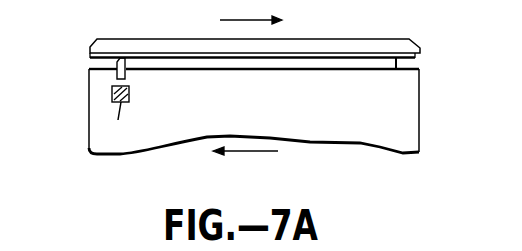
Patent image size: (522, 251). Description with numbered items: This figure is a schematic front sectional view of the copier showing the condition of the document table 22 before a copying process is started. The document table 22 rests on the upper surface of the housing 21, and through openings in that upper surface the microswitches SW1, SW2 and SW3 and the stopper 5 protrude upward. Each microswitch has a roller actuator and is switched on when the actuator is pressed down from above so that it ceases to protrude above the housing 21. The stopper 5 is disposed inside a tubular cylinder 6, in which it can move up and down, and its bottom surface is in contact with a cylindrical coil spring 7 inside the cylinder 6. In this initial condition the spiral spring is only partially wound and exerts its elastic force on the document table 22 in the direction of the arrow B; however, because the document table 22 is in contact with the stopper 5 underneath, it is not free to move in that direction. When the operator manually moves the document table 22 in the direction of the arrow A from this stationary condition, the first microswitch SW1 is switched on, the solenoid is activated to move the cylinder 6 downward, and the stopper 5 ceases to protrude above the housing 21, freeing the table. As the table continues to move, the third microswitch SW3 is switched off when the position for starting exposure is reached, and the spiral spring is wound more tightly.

The document table 22 is at (418, 52).
The housing 21 is at (419, 123).
The stopper 5 is at (125, 72).
The cylindrical coil spring 7 is at (129, 92).
The tubular cylinder 6 is at (117, 120).
The first microswitch SW1 is at (403, 79).
The second microswitch SW2 is at (104, 78).
The third microswitch SW3 is at (271, 79).
The arrow A is at (242, 19).
The arrow B is at (254, 151).